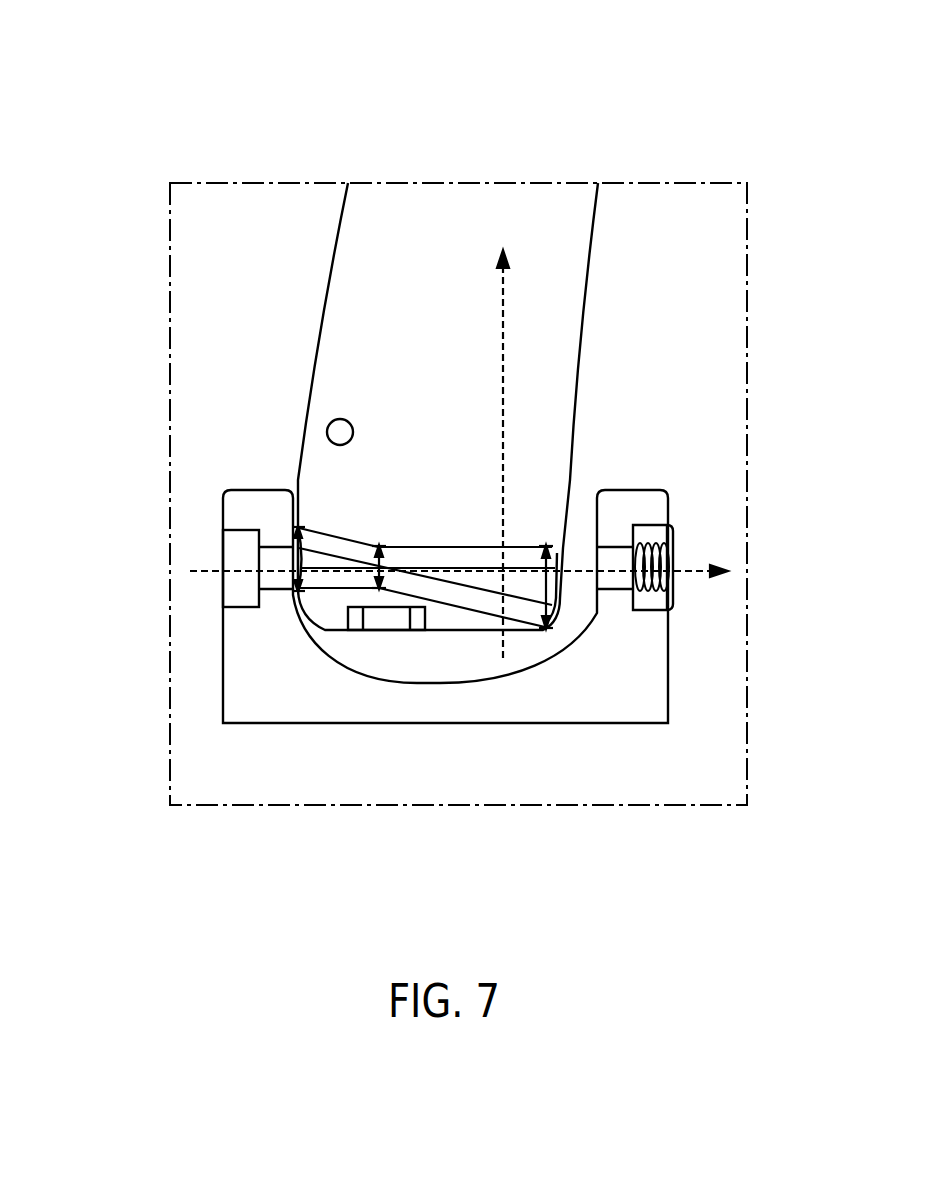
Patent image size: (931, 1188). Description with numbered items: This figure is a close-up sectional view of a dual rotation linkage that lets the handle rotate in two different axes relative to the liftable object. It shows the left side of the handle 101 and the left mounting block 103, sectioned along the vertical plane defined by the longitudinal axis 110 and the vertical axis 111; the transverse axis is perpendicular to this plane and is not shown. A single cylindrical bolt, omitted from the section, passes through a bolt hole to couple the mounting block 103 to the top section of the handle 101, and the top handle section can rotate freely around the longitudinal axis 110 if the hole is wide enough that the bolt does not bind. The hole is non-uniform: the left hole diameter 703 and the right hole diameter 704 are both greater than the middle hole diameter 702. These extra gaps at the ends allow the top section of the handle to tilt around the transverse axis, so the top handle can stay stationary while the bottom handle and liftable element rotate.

The handle 101 is at (373, 273).
The left mounting block 103 is at (265, 692).
The longitudinal axis 110 is at (685, 565).
The vertical axis 111 is at (503, 325).
The middle hole diameter 702 is at (380, 592).
The left hole diameter 703 is at (295, 593).
The right hole diameter 704 is at (547, 630).